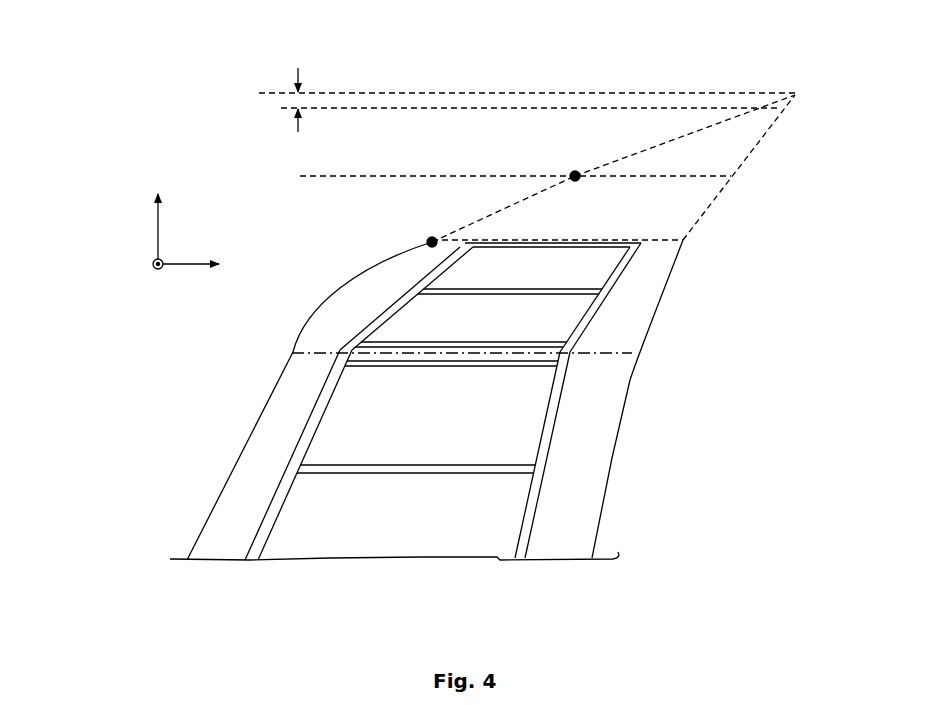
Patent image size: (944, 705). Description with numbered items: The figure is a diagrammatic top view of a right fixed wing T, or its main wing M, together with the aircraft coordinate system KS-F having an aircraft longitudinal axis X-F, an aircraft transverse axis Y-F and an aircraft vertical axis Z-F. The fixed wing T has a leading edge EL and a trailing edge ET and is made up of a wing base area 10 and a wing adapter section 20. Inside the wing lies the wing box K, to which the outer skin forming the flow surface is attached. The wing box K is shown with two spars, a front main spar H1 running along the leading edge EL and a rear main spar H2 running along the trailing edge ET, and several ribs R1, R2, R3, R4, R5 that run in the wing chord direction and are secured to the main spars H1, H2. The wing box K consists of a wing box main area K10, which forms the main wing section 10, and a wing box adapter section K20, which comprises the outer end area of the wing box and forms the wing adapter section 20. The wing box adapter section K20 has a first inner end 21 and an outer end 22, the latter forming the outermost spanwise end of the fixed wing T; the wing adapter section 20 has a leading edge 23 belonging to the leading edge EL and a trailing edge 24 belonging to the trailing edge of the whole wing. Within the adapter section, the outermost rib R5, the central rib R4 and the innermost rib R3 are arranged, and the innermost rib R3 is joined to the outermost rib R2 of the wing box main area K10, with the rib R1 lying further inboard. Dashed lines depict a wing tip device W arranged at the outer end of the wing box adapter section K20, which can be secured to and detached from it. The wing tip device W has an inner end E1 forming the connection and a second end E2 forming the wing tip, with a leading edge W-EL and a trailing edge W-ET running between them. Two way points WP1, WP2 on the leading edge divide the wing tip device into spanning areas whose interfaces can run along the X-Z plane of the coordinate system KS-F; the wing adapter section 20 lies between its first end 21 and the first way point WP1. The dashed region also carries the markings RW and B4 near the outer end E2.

The wing base area 10 is at (731, 471).
The wing adapter section 20 is at (688, 313).
The first inner end 21 is at (290, 350).
The outer end 22 is at (557, 250).
The leading edge 23 is at (348, 279).
The trailing edge 24 is at (650, 322).
The wing box K is at (370, 528).
The wing box main area K10 is at (515, 500).
The wing box adapter section K20 is at (603, 277).
The rib R1 is at (418, 475).
The outermost rib R2 is at (465, 361).
The innermost rib R3 is at (480, 347).
The central rib R4 is at (493, 294).
The outermost rib R5 is at (600, 251).
The front main spar H1 is at (313, 415).
The rear main spar H2 is at (527, 533).
The leading edge EL is at (270, 391).
The trailing edge ET is at (613, 459).
The wing tip device W is at (552, 139).
The web thickness B4 is at (750, 100).
The web edge RW is at (618, 241).
The leading edge W-EL is at (505, 211).
The trailing edge W-ET is at (703, 212).
The inner end E1 is at (688, 245).
The second end E2 is at (801, 93).
The first way point WP1 is at (428, 238).
The second way point WP2 is at (571, 173).
The coordinate system KS-F is at (157, 211).
The aircraft longitudinal axis X-F is at (204, 253).
The aircraft transverse axis Y-F is at (174, 216).
The aircraft vertical axis Z-F is at (129, 266).
The main wing M is at (192, 383).
The fixed wing T is at (101, 403).